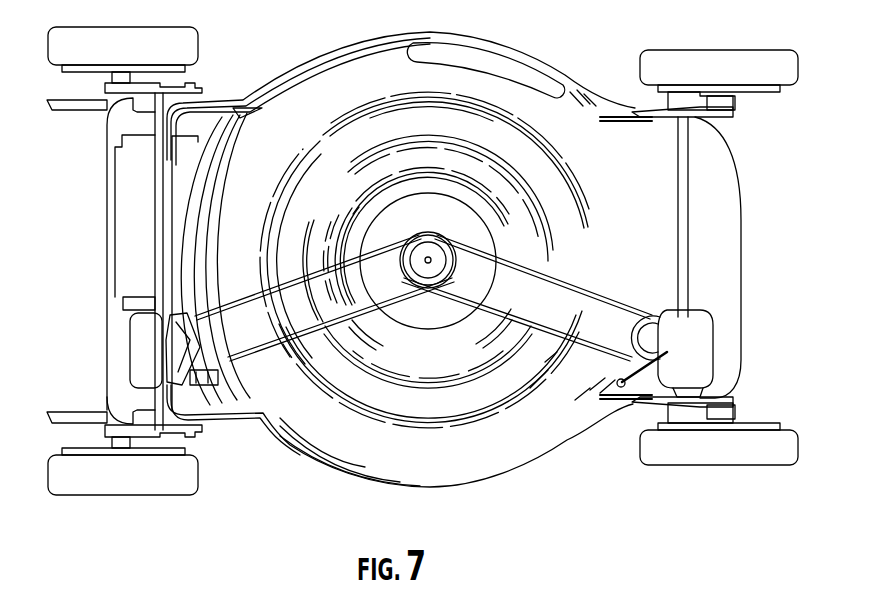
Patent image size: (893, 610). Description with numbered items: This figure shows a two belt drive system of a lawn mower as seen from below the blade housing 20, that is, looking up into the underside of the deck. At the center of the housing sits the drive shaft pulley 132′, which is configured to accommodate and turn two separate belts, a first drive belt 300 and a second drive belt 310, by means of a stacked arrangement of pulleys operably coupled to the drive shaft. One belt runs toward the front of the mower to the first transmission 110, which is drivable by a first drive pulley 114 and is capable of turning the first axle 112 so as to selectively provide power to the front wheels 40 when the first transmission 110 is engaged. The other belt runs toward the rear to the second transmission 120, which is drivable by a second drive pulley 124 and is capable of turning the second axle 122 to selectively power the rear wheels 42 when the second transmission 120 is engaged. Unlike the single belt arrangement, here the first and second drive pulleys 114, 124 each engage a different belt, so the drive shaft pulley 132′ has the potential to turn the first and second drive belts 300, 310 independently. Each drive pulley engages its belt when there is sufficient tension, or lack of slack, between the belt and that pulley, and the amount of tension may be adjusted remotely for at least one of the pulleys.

The blade housing 20 is at (280, 155).
The front wheels 40 is at (700, 478).
The rear wheels 42 is at (142, 510).
The first transmission 110 is at (690, 350).
The first axle 112 is at (687, 185).
The first drive pulley 114 is at (620, 340).
The second transmission 120 is at (185, 427).
The second axle 122 is at (153, 293).
The second drive pulley 124 is at (215, 330).
The drive shaft pulley 132′ is at (431, 235).
The first drive belt 300 is at (540, 265).
The second drive belt 310 is at (288, 278).